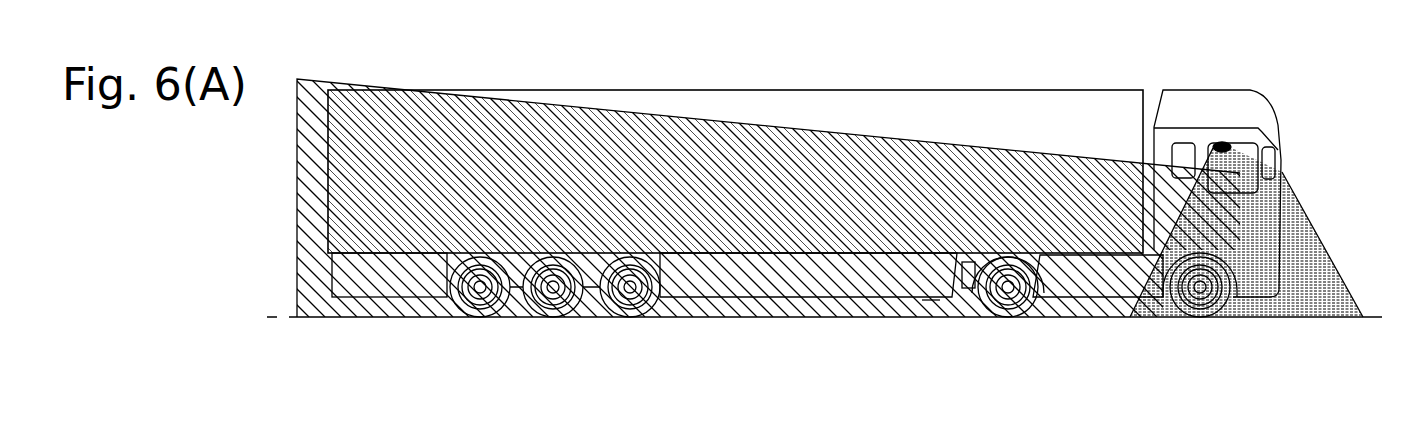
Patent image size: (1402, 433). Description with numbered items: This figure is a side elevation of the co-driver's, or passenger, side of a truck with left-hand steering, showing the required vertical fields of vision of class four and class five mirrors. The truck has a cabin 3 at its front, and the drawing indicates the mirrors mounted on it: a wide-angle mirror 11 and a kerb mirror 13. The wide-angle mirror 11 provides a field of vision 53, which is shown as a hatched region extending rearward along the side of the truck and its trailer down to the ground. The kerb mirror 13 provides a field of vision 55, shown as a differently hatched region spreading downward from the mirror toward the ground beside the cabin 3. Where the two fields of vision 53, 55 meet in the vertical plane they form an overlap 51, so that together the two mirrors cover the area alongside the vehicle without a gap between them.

The cabin 3 is at (1253, 115).
The wide-angle mirror 11 is at (1277, 180).
The kerb mirror 13 is at (1230, 140).
The overlap 51 is at (1195, 182).
The field of vision of the wide-angle mirror 53 is at (725, 207).
The field of vision of the kerb mirror 55 is at (1302, 290).